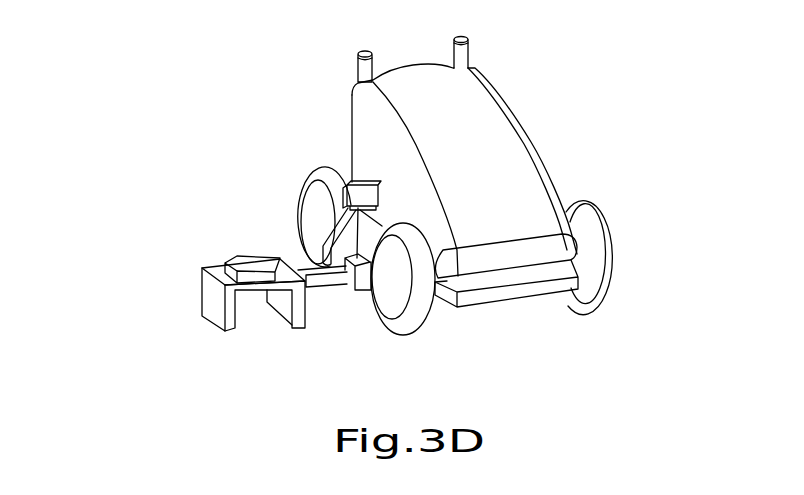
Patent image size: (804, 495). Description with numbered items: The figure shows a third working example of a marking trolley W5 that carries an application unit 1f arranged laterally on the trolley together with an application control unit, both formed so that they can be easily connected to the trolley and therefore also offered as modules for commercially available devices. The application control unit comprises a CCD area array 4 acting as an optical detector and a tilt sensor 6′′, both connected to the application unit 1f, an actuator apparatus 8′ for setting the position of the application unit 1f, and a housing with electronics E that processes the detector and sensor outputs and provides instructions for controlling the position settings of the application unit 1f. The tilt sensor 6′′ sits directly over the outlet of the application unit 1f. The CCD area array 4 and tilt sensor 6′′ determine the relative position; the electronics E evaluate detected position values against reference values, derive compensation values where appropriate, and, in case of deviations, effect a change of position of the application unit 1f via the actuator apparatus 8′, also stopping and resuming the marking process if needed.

The marking trolley W5 is at (446, 195).
The CCD area array 4 is at (362, 192).
The tilt sensor 6′′ is at (261, 261).
The application unit 1f is at (207, 301).
The actuator apparatus 8′ is at (330, 291).
The housing with electronics E is at (502, 292).